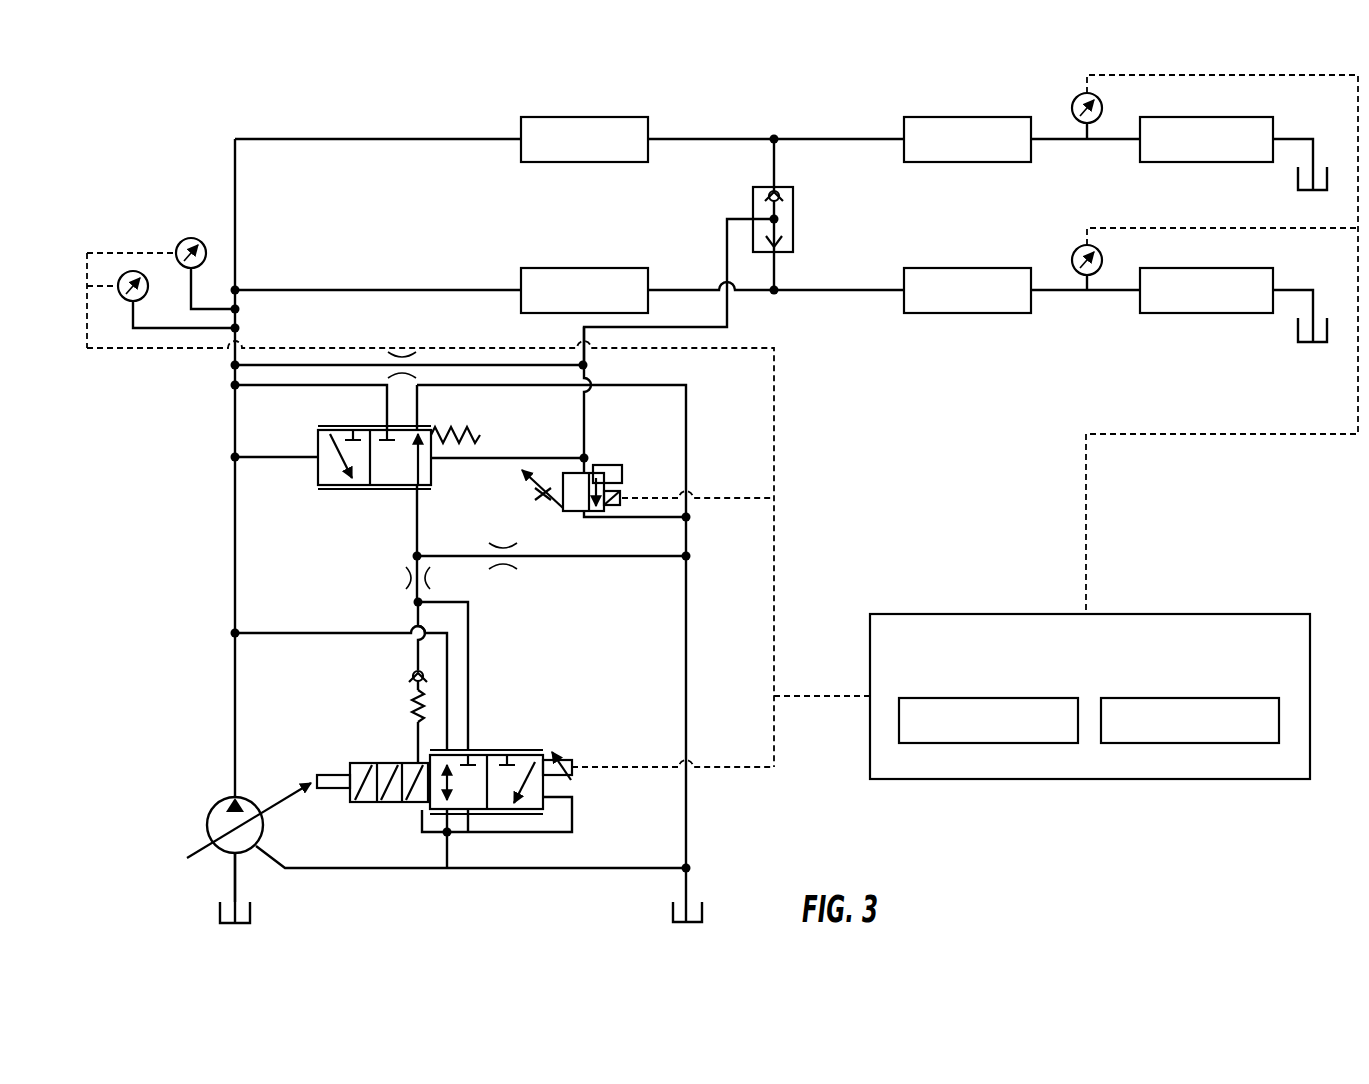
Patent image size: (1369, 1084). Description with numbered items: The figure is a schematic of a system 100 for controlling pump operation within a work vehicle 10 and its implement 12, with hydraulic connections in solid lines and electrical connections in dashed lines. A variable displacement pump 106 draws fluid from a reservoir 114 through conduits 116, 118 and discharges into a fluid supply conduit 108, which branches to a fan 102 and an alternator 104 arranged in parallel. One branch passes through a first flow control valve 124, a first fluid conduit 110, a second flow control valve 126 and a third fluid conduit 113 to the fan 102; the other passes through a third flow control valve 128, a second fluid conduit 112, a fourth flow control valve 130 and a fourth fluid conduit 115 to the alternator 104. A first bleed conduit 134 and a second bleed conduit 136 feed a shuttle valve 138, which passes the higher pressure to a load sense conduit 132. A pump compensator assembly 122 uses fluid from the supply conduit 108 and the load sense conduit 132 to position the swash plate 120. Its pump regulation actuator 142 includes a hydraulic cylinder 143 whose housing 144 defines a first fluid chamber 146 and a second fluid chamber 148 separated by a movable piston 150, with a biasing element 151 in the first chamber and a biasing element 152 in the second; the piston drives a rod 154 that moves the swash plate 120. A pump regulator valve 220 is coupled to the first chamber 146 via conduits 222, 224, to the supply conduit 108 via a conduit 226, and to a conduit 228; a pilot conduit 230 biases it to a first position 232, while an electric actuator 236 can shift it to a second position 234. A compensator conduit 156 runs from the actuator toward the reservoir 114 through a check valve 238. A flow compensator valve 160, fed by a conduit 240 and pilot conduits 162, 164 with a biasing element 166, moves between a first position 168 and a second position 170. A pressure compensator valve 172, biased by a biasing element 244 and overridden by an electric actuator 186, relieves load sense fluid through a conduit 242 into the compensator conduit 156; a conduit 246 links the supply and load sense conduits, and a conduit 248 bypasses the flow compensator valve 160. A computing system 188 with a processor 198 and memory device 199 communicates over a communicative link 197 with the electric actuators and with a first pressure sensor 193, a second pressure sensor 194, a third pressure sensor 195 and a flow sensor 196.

The work vehicle 10 is at (430, 92).
The implement 12 is at (998, 385).
The system for controlling pump operation 100 is at (100, 140).
The fan 102 is at (1193, 162).
The alternator 104 is at (1193, 313).
The pump 106 is at (208, 793).
The fluid supply conduit 108 is at (372, 139).
The first fluid conduit 110 is at (678, 139).
The second fluid conduit 112 is at (840, 292).
The third fluid conduit 113 is at (1052, 141).
The fluid tank or reservoir 114 is at (1313, 195).
The fourth fluid conduit 115 is at (1065, 292).
The conduit 116 is at (240, 872).
The conduit 118 is at (605, 870).
The swash plate 120 is at (200, 848).
The pump compensator assembly 122 is at (439, 797).
The first flow control valve 124 is at (578, 117).
The second flow control valve 126 is at (961, 117).
The third flow control valve 128 is at (578, 268).
The fourth flow control valve 130 is at (961, 268).
The load sense conduit 132 is at (735, 312).
The first bleed conduit 134 is at (776, 178).
The second bleed conduit 136 is at (776, 273).
The shuttle valve 138 is at (753, 198).
The pump regulation actuator 142 is at (320, 762).
The hydraulic cylinder 143 is at (327, 733).
The housing 144 is at (355, 803).
The first fluid chamber 146 is at (412, 763).
The second fluid chamber 148 is at (362, 762).
The movable piston 150 is at (404, 803).
The biasing element 151 is at (432, 832).
The biasing element 152 is at (365, 803).
The rod 154 is at (337, 760).
The compensator conduit 156 is at (688, 665).
The flow compensator valve 160 is at (344, 485).
The pilot conduit 162 is at (258, 460).
The pilot conduit 164 is at (473, 460).
The biasing element 166 is at (456, 428).
The first position 168 is at (405, 488).
The second position 170 is at (340, 488).
The pressure compensator valve 172 is at (598, 438).
The electric actuator 186 is at (622, 497).
The computing system 188 is at (958, 614).
The first pressure sensor 193 is at (1075, 97).
The second pressure sensor 194 is at (1075, 250).
The third pressure sensor 195 is at (126, 272).
The flow sensor 196 is at (191, 238).
The communicative link 197 is at (1088, 532).
The processor 198 is at (975, 743).
The memory device 199 is at (1176, 743).
The pump regulator valve 220 is at (503, 727).
The conduit 222 is at (468, 836).
The conduit 224 is at (432, 835).
The conduit 226 is at (270, 630).
The conduit 228 is at (472, 603).
The pilot conduit 230 is at (520, 834).
The first position 232 is at (460, 820).
The second position 234 is at (517, 750).
The electric actuator 236 is at (568, 755).
The check valve 238 is at (405, 668).
The conduit 240 is at (250, 388).
The conduit 242 is at (613, 519).
The biasing element 244 is at (543, 502).
The conduit 246 is at (493, 363).
The conduit 248 is at (612, 558).